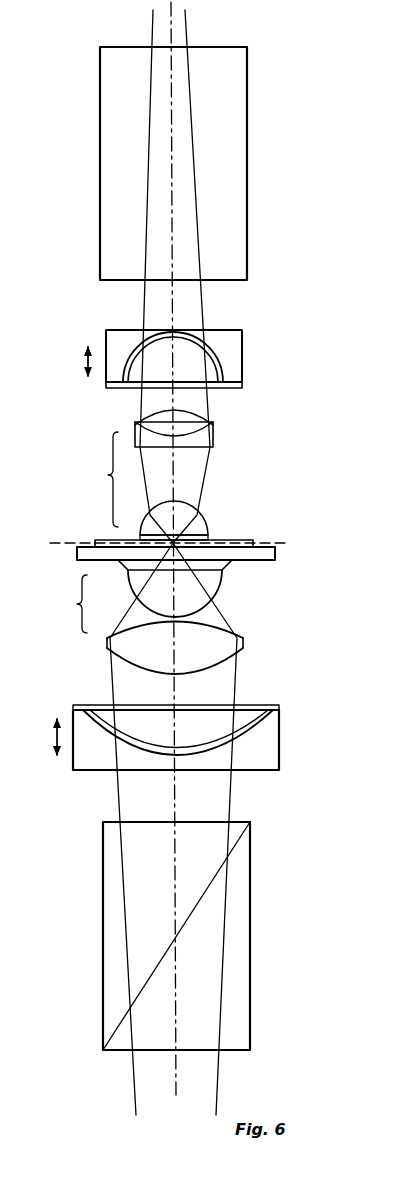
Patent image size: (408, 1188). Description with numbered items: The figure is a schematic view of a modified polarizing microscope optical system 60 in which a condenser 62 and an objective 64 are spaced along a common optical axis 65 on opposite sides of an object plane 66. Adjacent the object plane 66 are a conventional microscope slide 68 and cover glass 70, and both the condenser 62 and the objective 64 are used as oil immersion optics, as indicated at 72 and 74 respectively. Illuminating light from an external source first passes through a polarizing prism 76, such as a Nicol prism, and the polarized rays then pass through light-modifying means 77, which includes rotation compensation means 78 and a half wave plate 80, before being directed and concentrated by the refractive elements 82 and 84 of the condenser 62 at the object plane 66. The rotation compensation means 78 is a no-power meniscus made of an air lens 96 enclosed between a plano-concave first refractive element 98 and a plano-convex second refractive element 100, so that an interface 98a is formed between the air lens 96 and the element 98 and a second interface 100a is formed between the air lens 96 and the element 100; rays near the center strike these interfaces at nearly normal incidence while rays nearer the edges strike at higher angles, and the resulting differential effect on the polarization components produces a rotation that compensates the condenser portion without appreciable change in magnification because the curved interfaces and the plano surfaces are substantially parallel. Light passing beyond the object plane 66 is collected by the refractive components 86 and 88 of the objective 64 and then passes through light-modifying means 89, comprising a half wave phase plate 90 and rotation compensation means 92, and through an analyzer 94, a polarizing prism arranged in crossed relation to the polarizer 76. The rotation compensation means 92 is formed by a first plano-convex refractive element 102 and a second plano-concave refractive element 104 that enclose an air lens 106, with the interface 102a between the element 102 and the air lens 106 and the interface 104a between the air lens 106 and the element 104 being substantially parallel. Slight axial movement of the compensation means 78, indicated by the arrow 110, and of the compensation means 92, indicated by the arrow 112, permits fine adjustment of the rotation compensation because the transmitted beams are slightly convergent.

The polarizing microscope optical system 60 is at (127, 310).
The condenser 62 is at (71, 604).
The objective 64 is at (100, 479).
The optical axis 65 is at (171, 221).
The object plane 66 is at (292, 543).
The microscope slide 68 is at (265, 558).
The cover glass 70 is at (238, 548).
The oil immersion 72 is at (226, 563).
The oil immersion 74 is at (212, 540).
The polarizing prism 76 is at (242, 965).
The light-modifying means 77 is at (284, 740).
The rotation compensation means 78 is at (280, 754).
The half wave plate 80 is at (270, 708).
The refractive element 82 is at (240, 647).
The refractive element 84 is at (208, 600).
The refractive component 86 is at (190, 515).
The refractive component 88 is at (214, 434).
The light-modifying means 89 is at (242, 318).
The half wave phase plate 90 is at (237, 389).
The rotation compensation means 92 is at (245, 337).
The analyzer 94 is at (247, 126).
The air lens 96 is at (258, 722).
The plano-concave first refractive element 98 is at (258, 763).
The interface 98a is at (95, 730).
The plano-convex second refractive element 100 is at (213, 718).
The interface 100a is at (105, 712).
The first plano-convex refractive element 102 is at (220, 375).
The interface 102a is at (126, 384).
The second plano-concave refractive element 104 is at (197, 334).
The interface 104a is at (118, 373).
The air lens 106 is at (218, 360).
The arrow 110 is at (54, 737).
The arrow 112 is at (85, 357).